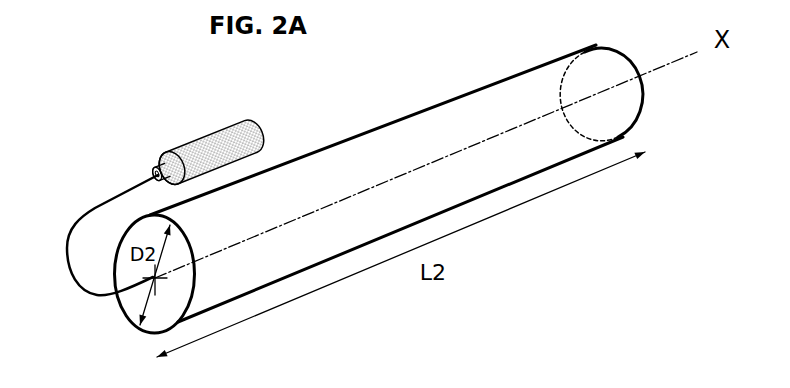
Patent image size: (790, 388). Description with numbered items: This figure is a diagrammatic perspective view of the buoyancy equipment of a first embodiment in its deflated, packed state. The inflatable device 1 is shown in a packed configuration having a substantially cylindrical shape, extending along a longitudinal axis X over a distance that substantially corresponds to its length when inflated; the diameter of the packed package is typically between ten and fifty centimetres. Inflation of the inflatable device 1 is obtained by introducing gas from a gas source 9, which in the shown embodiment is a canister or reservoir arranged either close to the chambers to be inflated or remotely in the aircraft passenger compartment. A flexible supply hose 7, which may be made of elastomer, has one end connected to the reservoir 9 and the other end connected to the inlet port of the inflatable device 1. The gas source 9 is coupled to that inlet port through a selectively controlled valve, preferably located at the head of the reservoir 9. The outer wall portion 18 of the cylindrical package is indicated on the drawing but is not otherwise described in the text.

The inflatable device 1 is at (379, 171).
The outer surface of cylindrical body 18 is at (523, 68).
The supply hose 7 is at (66, 257).
The gas source 9 is at (158, 138).